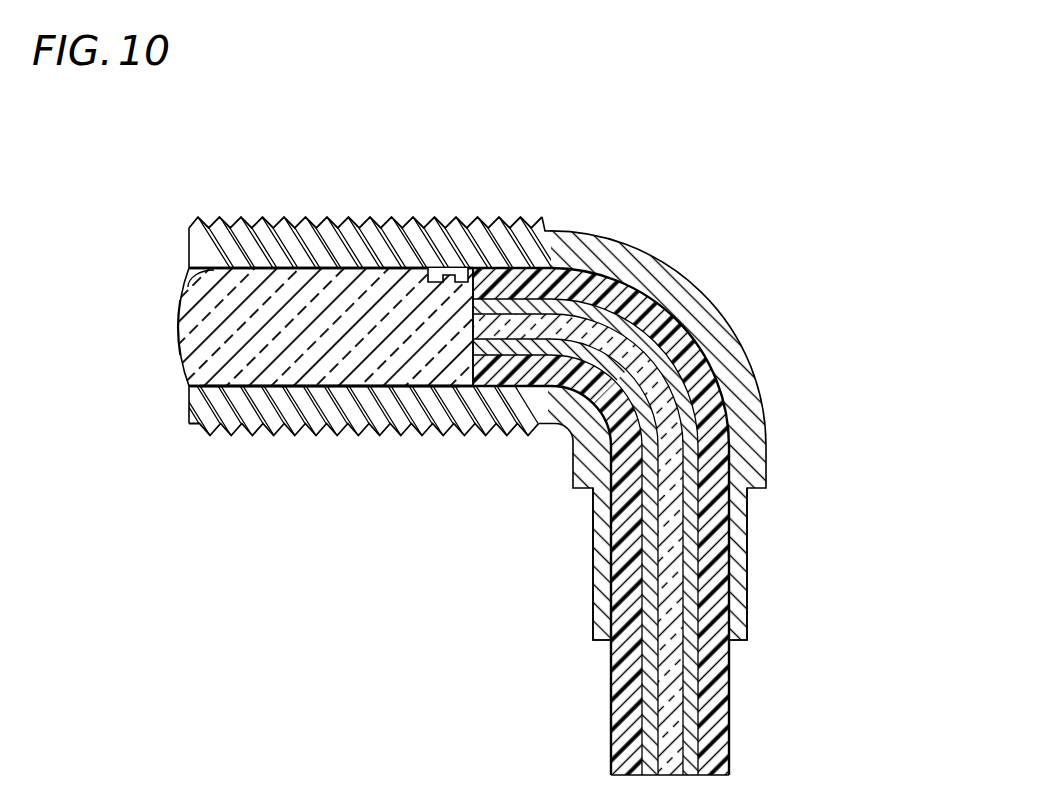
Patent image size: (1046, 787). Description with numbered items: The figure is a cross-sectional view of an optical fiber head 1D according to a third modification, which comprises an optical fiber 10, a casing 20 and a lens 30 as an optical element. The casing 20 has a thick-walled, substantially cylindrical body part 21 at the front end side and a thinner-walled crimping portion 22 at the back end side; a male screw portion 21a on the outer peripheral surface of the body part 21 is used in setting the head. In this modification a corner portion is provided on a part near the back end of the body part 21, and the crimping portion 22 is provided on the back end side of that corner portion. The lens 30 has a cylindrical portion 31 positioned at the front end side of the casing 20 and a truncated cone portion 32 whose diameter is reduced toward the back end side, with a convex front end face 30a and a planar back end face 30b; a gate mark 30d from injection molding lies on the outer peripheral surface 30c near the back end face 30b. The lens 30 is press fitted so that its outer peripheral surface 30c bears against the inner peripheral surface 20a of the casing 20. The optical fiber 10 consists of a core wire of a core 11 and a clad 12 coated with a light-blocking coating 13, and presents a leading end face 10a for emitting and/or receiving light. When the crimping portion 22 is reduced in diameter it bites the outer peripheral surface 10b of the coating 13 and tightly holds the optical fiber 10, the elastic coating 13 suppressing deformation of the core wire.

The optical fiber head 1D is at (745, 148).
The optical fiber 10 is at (738, 723).
The leading end face 10a is at (465, 353).
The outer peripheral surface 10b is at (577, 478).
The core 11 is at (667, 538).
The clad 12 is at (647, 603).
The coating 13 is at (627, 672).
The casing 20 is at (217, 212).
The inner peripheral surface 20a is at (197, 278).
The body part 21 is at (573, 250).
The male screw portion 21a is at (327, 216).
The crimping portion 22 is at (737, 538).
The lens 30 is at (174, 328).
The front end face 30a is at (178, 347).
The back end face 30b is at (490, 294).
The outer peripheral surface 30c is at (270, 388).
The gate mark 30d is at (456, 282).
The cylindrical portion 31 is at (263, 312).
The truncated cone portion 32 is at (400, 312).